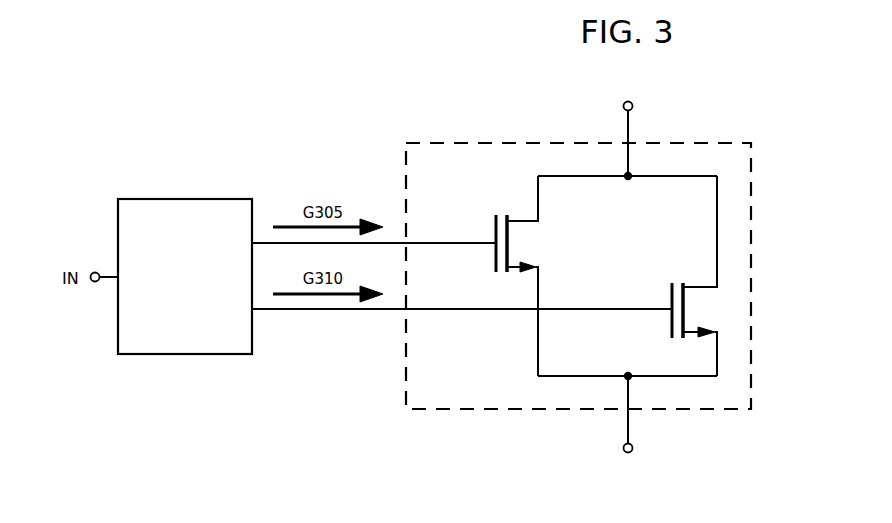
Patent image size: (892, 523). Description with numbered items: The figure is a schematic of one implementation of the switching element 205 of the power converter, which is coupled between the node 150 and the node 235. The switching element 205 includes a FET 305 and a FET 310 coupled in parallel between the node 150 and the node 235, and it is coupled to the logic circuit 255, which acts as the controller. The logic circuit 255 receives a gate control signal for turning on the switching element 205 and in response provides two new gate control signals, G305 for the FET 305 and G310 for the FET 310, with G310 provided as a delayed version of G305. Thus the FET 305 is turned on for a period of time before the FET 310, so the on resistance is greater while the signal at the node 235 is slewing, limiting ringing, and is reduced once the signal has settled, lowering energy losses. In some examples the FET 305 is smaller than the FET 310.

The logic circuit 255 is at (183, 199).
The switching element 205 is at (751, 222).
The node 150 is at (633, 104).
The FET 305 is at (493, 225).
The FET 310 is at (669, 328).
The node 235 is at (633, 450).